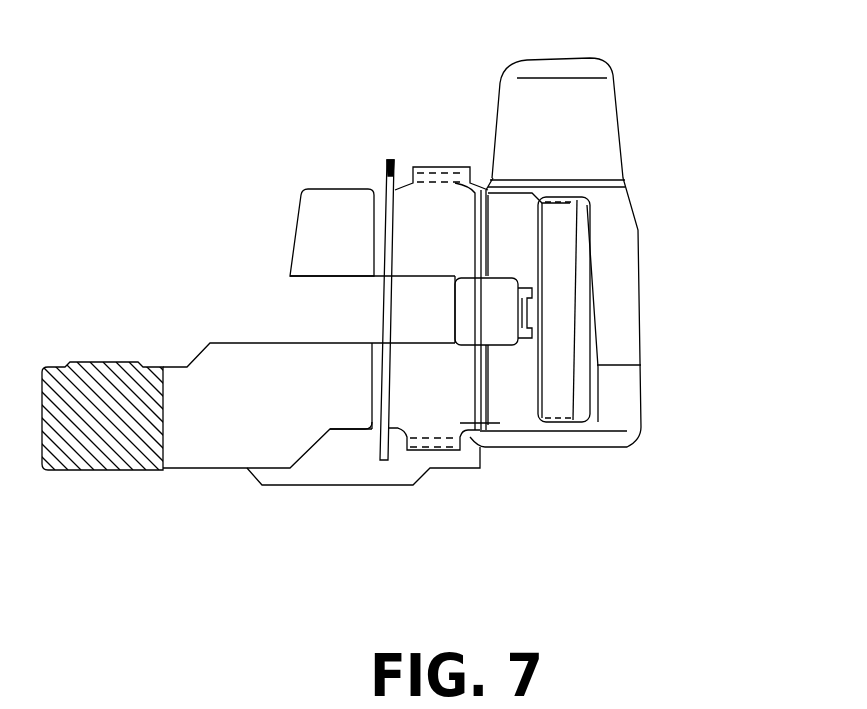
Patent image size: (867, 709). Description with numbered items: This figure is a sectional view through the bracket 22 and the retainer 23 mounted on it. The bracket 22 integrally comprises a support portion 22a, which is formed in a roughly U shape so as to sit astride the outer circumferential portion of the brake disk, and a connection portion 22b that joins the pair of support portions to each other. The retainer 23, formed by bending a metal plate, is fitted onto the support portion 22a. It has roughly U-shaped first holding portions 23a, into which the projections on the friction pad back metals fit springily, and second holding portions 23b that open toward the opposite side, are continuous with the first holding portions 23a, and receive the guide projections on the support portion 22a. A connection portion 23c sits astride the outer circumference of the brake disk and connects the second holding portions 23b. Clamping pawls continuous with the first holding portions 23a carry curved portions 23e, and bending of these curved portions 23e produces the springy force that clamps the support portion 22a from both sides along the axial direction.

The bracket 22 is at (626, 462).
The support portion 22a is at (633, 398).
The connection portion 22b is at (82, 470).
The retainer 23 is at (428, 158).
The first holding portion 23a is at (427, 237).
The second holding portion 23b is at (513, 212).
The connection portion 23c is at (567, 312).
The curved portion 23e is at (447, 166).